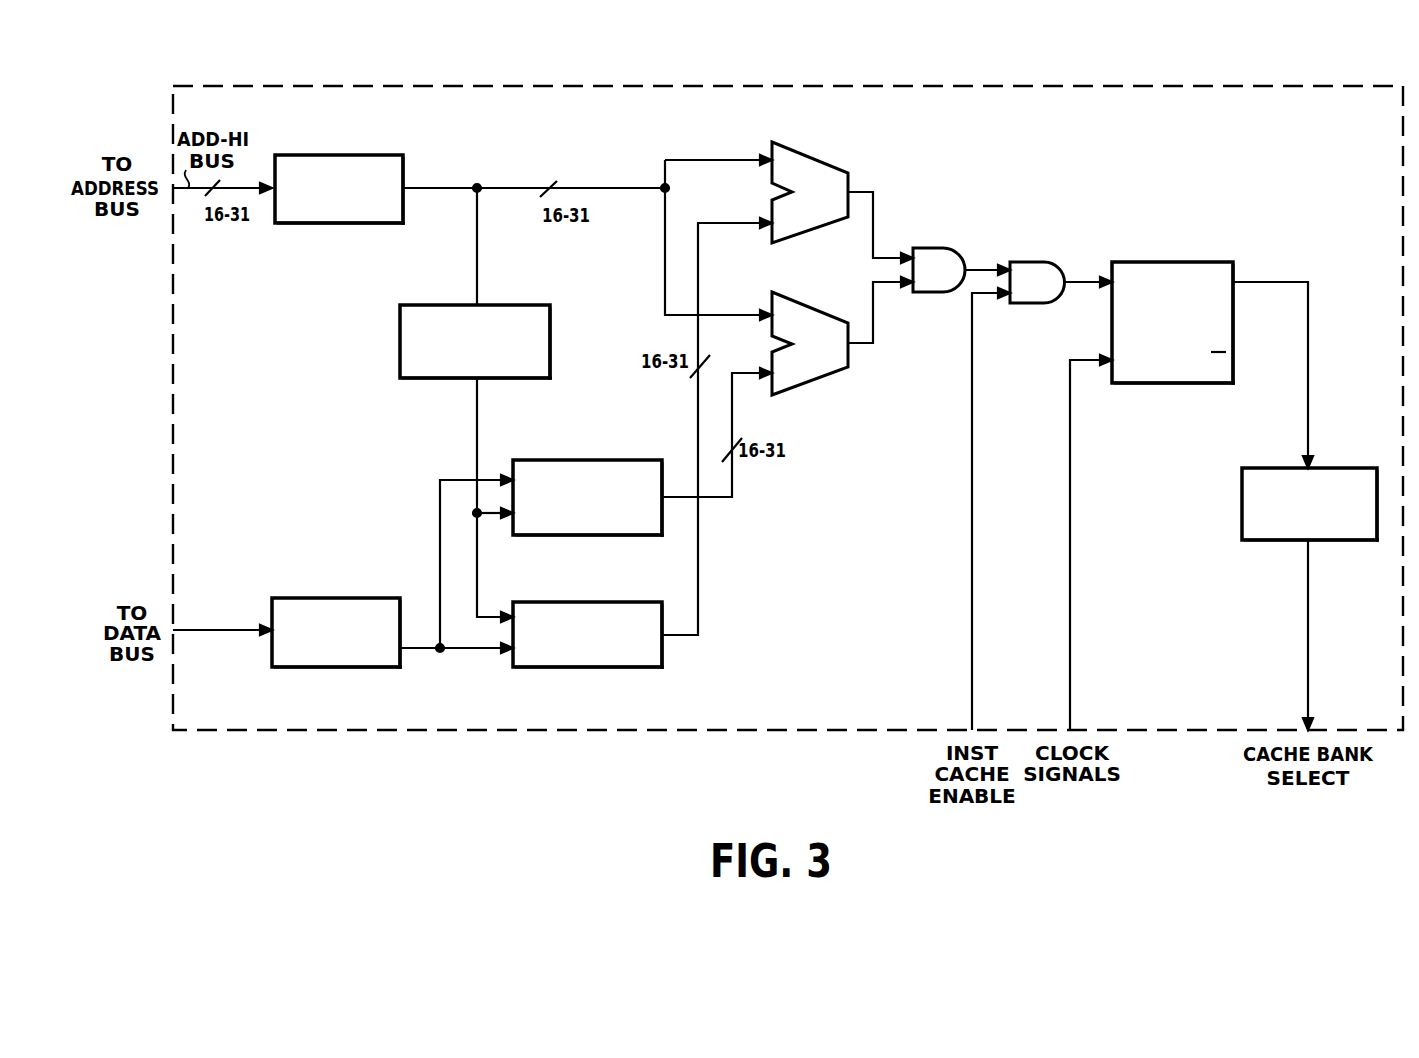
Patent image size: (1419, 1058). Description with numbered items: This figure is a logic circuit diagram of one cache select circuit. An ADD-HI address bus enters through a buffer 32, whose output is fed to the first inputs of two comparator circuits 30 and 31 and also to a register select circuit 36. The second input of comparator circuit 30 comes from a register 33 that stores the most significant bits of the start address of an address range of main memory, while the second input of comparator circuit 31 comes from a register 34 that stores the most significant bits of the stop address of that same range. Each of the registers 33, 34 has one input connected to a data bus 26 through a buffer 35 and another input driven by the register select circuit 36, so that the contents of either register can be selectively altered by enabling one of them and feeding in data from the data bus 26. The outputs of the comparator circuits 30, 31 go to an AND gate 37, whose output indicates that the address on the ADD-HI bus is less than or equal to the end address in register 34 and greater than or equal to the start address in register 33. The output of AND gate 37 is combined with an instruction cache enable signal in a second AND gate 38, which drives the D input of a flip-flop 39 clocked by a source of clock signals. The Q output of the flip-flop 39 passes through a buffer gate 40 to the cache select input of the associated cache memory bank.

The data bus 26 is at (215, 630).
The comparator circuit 30 is at (812, 234).
The comparator circuit 31 is at (812, 386).
The buffer 32 is at (403, 163).
The register 33 is at (625, 535).
The register 34 is at (625, 667).
The buffer 35 is at (360, 667).
The register select circuit 36 is at (400, 342).
The AND gate 37 is at (942, 292).
The AND gate 38 is at (1042, 303).
The flip-flop 39 is at (1175, 383).
The buffer gate 40 is at (1242, 505).